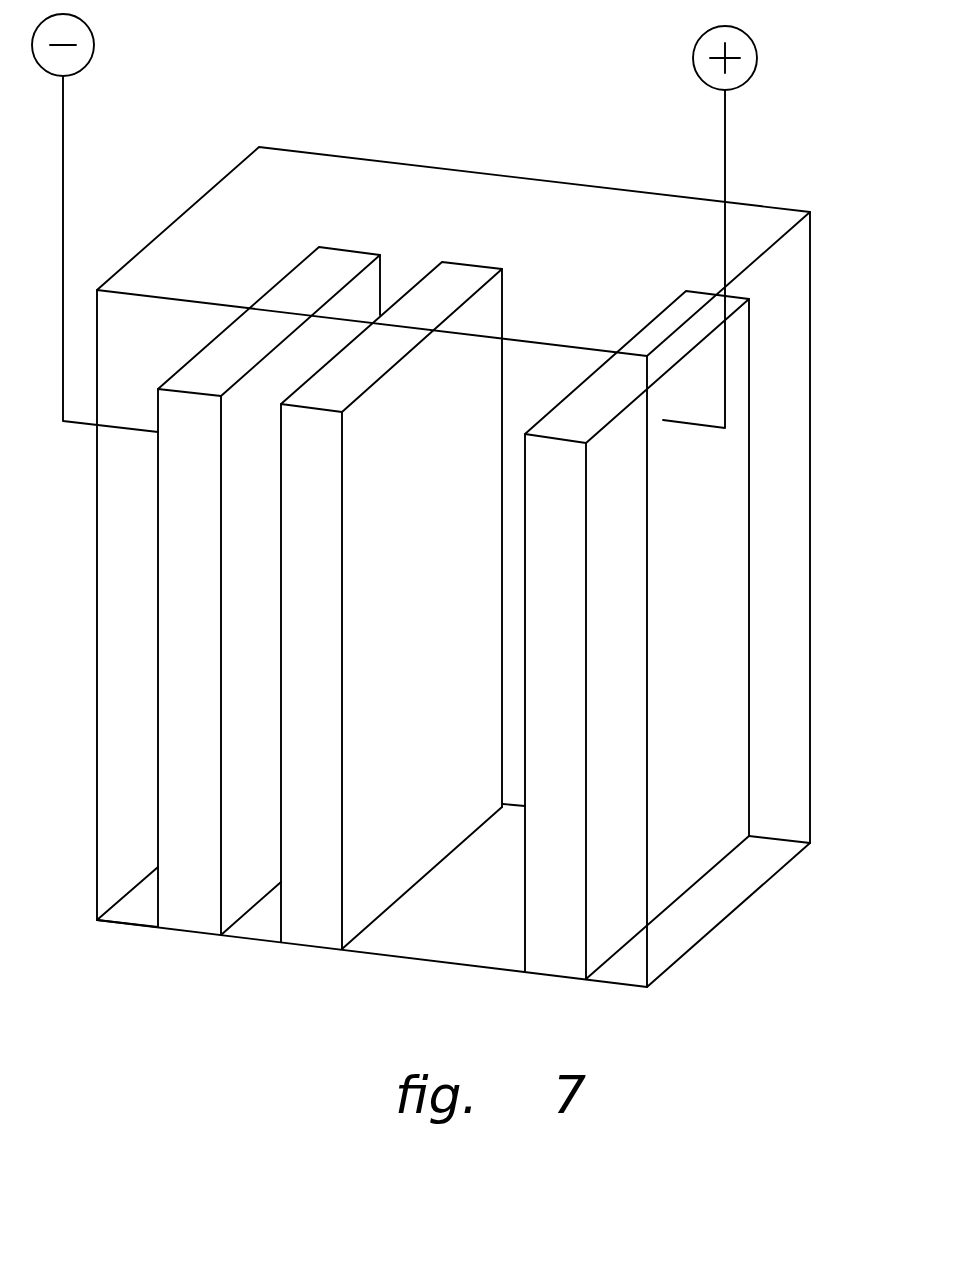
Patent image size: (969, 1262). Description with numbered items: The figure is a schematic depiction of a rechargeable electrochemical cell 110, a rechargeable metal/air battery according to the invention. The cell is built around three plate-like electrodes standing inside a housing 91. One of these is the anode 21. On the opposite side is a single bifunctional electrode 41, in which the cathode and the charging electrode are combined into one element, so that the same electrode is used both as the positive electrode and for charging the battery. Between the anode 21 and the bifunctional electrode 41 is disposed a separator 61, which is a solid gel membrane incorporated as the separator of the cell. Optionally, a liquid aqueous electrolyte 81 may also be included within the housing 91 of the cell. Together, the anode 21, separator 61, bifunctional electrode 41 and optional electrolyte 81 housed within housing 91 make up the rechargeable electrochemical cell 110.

The anode 21 is at (177, 766).
The bifunctional electrode 41 is at (561, 963).
The separator 61 is at (326, 934).
The liquid electrolyte 81 is at (139, 915).
The housing 91 is at (314, 153).
The rechargeable electrochemical cell 110 is at (672, 1053).